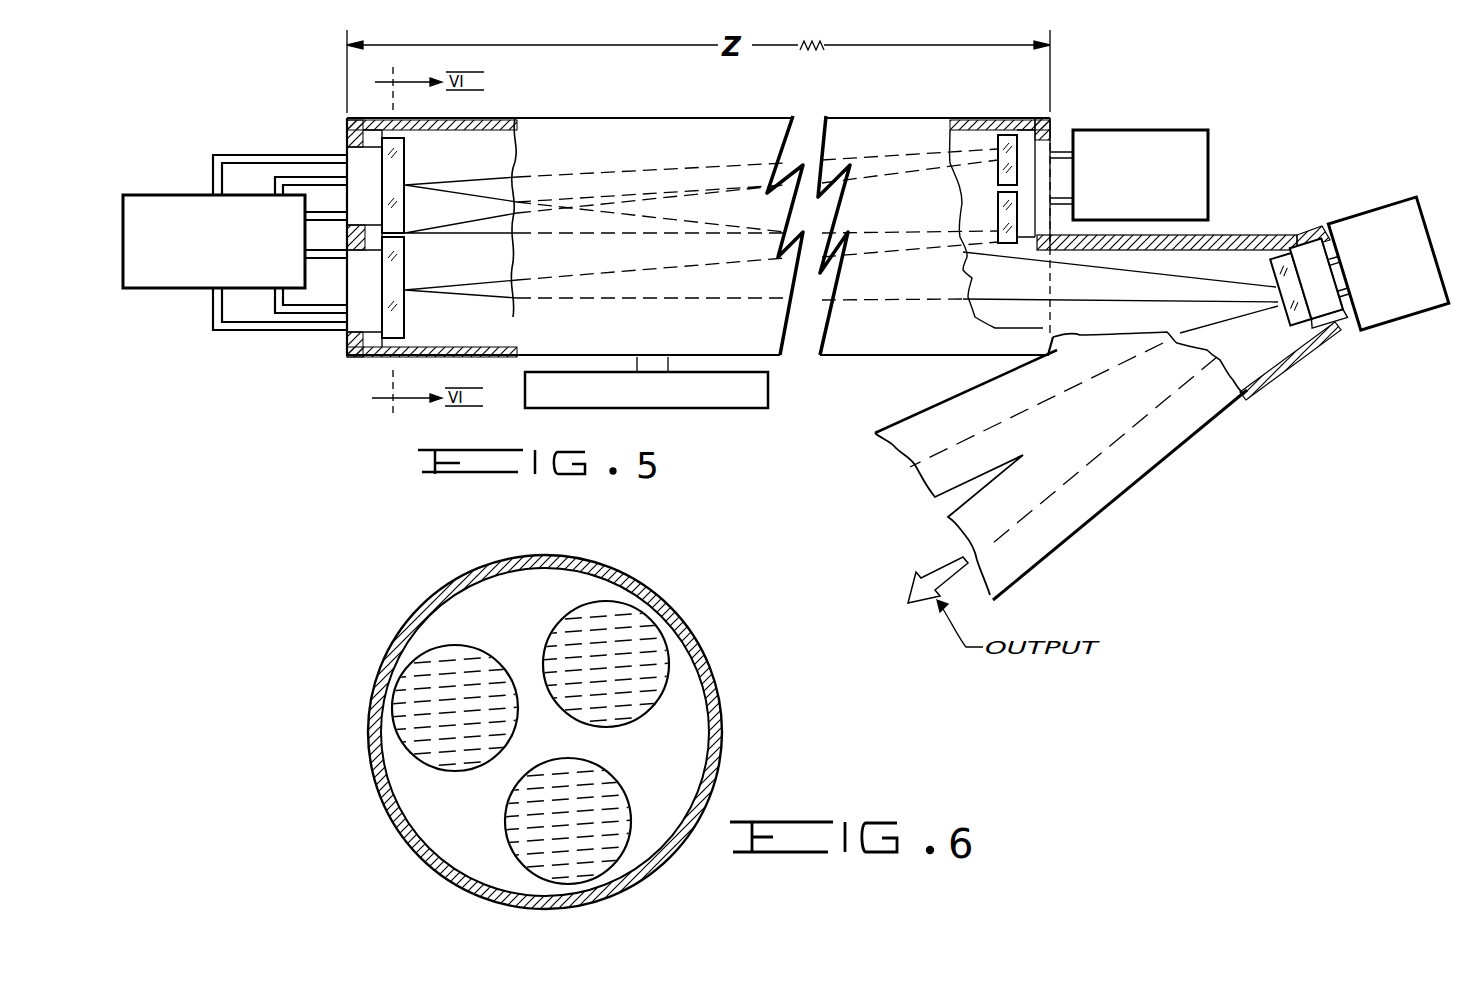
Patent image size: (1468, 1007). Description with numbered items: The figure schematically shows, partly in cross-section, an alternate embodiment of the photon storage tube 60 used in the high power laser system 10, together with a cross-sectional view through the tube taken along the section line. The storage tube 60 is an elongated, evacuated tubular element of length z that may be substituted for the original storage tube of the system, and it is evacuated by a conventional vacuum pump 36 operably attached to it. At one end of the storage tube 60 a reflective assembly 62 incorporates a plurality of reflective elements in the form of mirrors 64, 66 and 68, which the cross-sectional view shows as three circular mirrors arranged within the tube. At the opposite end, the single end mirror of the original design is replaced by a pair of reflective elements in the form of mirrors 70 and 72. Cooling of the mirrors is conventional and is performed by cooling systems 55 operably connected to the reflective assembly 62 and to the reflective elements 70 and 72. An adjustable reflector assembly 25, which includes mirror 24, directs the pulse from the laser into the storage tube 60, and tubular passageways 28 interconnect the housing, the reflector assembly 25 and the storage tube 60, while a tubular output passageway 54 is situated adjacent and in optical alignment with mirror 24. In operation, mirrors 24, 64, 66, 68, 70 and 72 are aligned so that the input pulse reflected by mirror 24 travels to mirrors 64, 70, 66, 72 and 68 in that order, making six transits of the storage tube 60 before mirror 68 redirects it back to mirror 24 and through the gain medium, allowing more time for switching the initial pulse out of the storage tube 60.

In FIG. 5, the laser system 10 is at (1073, 560).
In FIG. 5, the mirror 24 is at (1290, 333).
In FIG. 5, the adjustable reflector assembly 25 is at (1348, 349).
In FIG. 5, the tubular passageways 28 is at (1245, 232).
In FIG. 5, the vacuum pump 36 is at (768, 397).
In FIG. 5, the tubular output passageway 54 is at (1120, 500).
In FIG. 5, the cooling system 55 is at (133, 288).
In FIG. 5, the photon storage tube 60 is at (768, 110).
In FIG. 5, the reflective assembly 62 is at (326, 345).
In FIG. 6, the reflective assembly 62 is at (322, 813).
In FIG. 5, the mirror 64 is at (405, 147).
In FIG. 6, the mirror 64 is at (658, 687).
In FIG. 5, the mirror 66 is at (404, 237).
In FIG. 6, the mirror 66 is at (402, 728).
In FIG. 5, the mirror 68 is at (410, 330).
In FIG. 6, the mirror 68 is at (610, 852).
In FIG. 5, the mirror 70 is at (1000, 136).
In FIG. 5, the mirror 72 is at (997, 214).